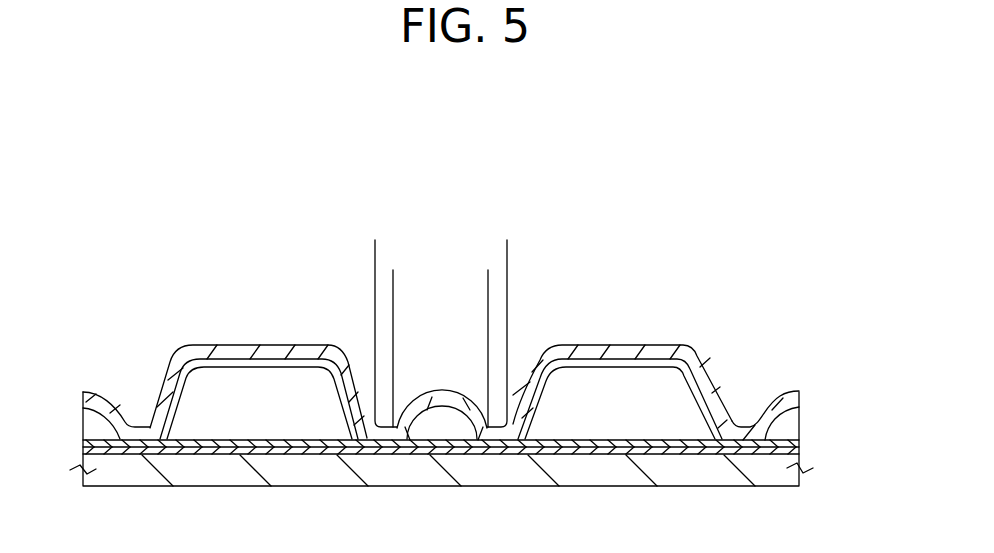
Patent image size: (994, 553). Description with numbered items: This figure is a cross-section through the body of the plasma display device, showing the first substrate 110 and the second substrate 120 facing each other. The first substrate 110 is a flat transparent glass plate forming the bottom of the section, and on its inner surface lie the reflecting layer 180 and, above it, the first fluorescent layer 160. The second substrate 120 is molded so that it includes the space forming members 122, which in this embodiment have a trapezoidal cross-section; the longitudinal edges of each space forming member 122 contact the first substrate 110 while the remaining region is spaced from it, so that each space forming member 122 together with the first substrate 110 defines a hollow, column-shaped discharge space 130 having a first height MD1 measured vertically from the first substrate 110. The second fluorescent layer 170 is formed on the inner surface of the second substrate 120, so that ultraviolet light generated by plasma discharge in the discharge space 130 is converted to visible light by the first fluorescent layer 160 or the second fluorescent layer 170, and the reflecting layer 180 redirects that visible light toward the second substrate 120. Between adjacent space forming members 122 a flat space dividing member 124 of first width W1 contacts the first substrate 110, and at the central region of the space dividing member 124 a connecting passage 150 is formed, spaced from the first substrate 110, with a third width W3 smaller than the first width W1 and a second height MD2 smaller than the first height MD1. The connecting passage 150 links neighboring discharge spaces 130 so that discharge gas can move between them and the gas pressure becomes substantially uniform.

The first substrate 110 is at (800, 478).
The second substrate 120 is at (800, 396).
The space forming member 122 is at (663, 352).
The space dividing member 124 is at (498, 430).
The discharge space 130 is at (598, 379).
The connecting passage 150 is at (441, 392).
The first fluorescent layer 160 is at (800, 441).
The second fluorescent layer 170 is at (272, 360).
The reflecting layer 180 is at (800, 451).
The first width W1 is at (507, 246).
The third width W3 is at (488, 277).
The first height MD1 is at (620, 367).
The second height MD2 is at (441, 407).